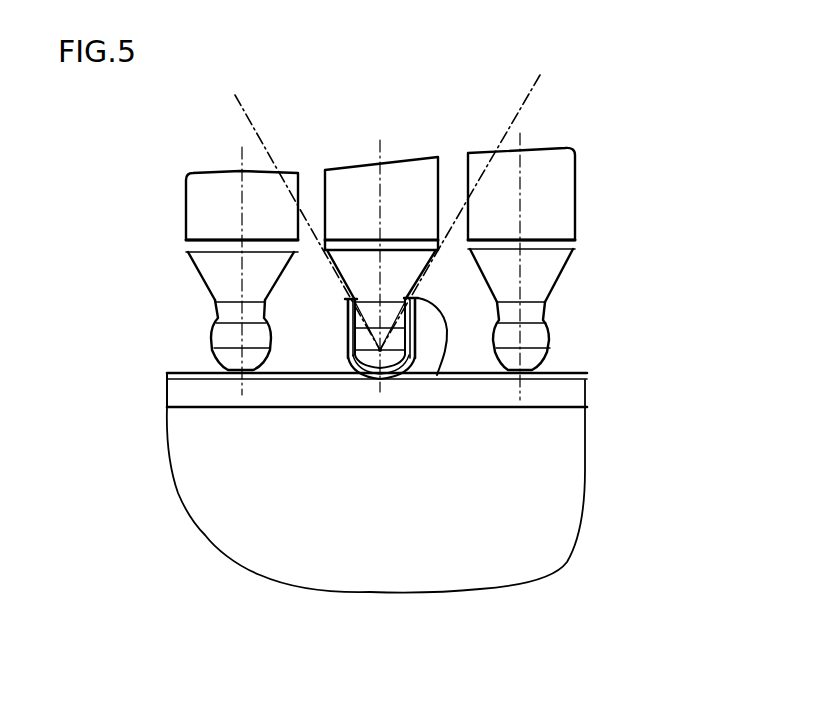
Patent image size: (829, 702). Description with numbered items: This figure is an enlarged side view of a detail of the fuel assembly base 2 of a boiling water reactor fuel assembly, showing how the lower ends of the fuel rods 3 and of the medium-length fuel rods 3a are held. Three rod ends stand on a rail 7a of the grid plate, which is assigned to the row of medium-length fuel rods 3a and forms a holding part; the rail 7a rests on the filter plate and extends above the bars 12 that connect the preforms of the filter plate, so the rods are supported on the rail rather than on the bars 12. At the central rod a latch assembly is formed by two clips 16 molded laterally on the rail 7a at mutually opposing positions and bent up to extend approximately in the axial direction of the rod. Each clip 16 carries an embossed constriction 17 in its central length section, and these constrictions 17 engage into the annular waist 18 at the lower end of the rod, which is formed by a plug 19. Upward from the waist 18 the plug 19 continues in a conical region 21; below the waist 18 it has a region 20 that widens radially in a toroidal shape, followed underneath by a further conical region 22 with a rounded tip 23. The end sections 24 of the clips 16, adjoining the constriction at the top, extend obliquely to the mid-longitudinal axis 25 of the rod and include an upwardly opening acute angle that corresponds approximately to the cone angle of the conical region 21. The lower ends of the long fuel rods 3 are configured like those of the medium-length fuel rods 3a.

The fuel assembly base 2 is at (562, 547).
The fuel rod 3 is at (207, 204).
The medium-length fuel rod 3a is at (352, 190).
The rail 7a is at (178, 372).
The bar 12 is at (437, 390).
The clip 16 is at (350, 345).
The constriction 17 is at (352, 300).
The annular waist 18 is at (530, 313).
The plug 19 is at (537, 268).
The radially widening toroidal region 20 is at (537, 336).
The conical region 21 is at (500, 270).
The conical region 22 is at (532, 355).
The rounded tip 23 is at (517, 378).
The end section 24 is at (350, 298).
The mid-longitudinal axis 25 is at (380, 140).